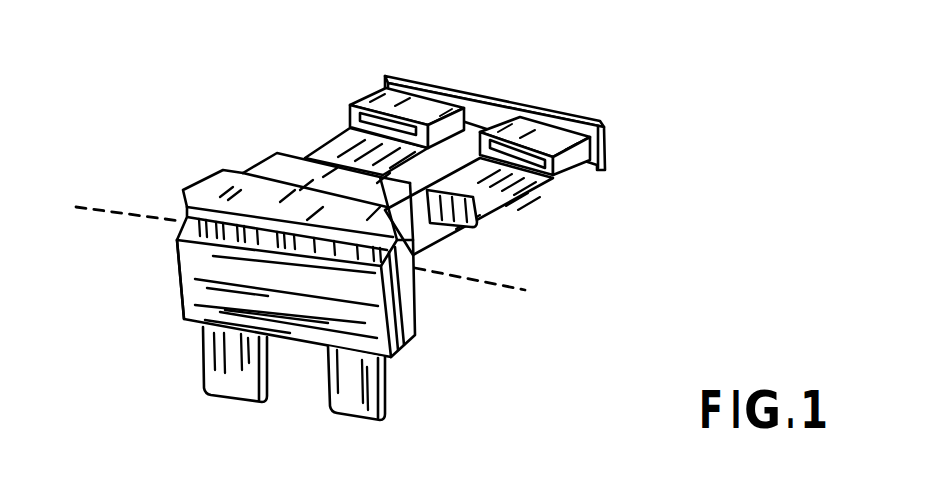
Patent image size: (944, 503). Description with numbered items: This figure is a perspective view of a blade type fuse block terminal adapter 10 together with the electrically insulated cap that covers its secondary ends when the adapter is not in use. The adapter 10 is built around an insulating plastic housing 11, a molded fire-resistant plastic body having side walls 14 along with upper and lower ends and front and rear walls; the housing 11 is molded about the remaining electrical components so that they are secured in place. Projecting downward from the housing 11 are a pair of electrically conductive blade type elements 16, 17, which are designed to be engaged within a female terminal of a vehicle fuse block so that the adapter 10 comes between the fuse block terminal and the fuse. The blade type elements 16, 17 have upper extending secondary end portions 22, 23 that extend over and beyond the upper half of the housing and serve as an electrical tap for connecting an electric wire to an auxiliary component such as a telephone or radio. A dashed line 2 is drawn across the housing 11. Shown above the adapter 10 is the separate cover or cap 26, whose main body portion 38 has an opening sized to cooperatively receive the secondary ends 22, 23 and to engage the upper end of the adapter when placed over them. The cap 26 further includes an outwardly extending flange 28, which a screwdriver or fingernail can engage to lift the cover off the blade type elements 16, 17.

The section line 2 is at (297, 253).
The adapter 10 is at (179, 303).
The insulating plastic housing 11 is at (414, 337).
The side walls 14 is at (176, 279).
The blade type element 16 is at (200, 378).
The blade type element 17 is at (396, 394).
The secondary end portion 22 is at (330, 148).
The secondary end portion 23 is at (488, 196).
The cover or cap 26 is at (370, 103).
The outwardly extending flange 28 is at (500, 104).
The main body portion 38 is at (605, 131).